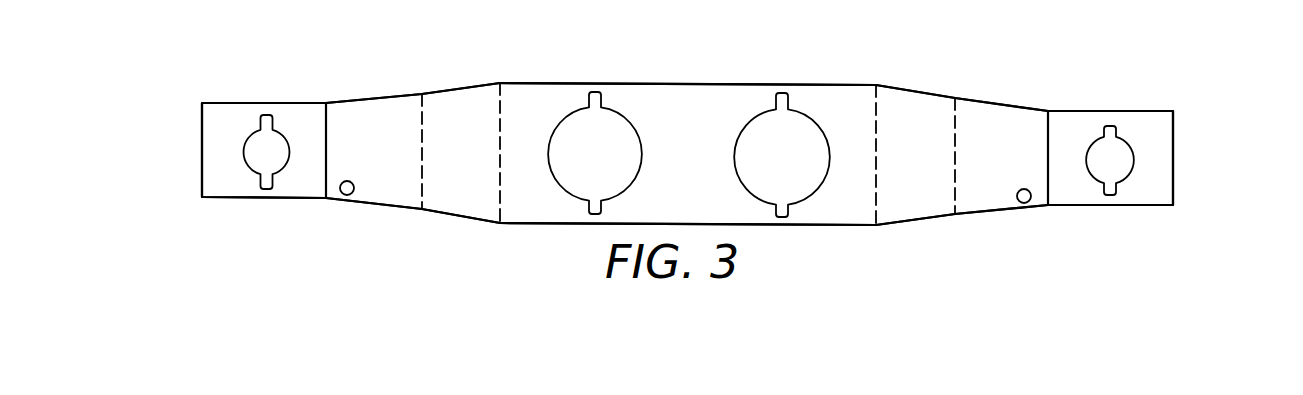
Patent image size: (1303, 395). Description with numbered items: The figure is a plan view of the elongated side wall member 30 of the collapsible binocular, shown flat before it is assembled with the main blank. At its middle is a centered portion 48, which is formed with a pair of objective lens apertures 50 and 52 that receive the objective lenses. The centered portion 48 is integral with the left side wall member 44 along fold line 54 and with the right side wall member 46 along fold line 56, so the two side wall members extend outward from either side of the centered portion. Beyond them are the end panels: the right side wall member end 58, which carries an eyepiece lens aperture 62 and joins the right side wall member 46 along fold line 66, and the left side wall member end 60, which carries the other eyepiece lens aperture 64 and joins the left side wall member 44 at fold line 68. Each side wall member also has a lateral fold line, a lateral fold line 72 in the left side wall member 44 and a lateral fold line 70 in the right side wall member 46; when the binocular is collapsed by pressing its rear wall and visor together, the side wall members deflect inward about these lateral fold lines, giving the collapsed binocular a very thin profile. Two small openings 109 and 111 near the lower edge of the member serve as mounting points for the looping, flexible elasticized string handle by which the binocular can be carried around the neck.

The elongated side wall member 30 is at (1198, 152).
The left side wall member 44 is at (922, 102).
The right side wall member 46 is at (453, 97).
The centered portion 48 is at (688, 105).
The objective lens aperture 50 is at (630, 152).
The objective lens aperture 52 is at (762, 184).
The fold line 54 is at (877, 161).
The fold line 56 is at (500, 143).
The right side wall member end 58 is at (220, 186).
The left side wall member end 60 is at (1135, 193).
The eyepiece lens aperture 62 is at (272, 158).
The eyepiece lens aperture 64 is at (1122, 152).
The fold line 66 is at (327, 154).
The fold line 68 is at (1048, 140).
The lateral fold line 70 is at (423, 168).
The lateral fold line 72 is at (957, 190).
The opening 109 is at (347, 197).
The opening 111 is at (1028, 204).